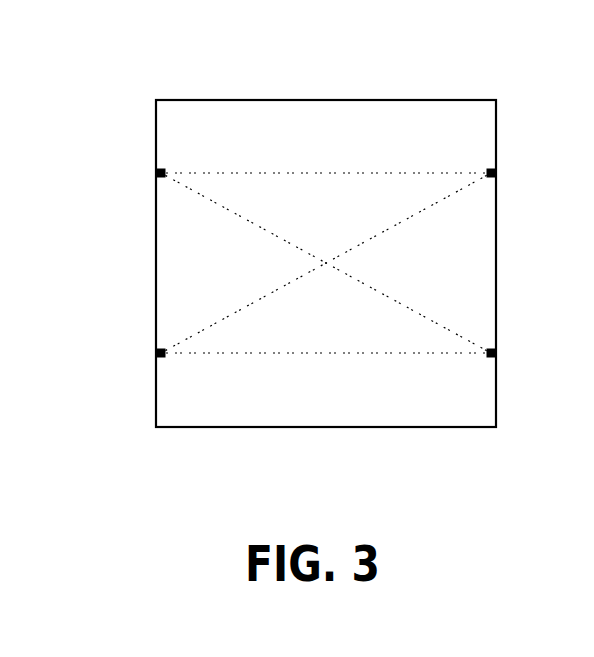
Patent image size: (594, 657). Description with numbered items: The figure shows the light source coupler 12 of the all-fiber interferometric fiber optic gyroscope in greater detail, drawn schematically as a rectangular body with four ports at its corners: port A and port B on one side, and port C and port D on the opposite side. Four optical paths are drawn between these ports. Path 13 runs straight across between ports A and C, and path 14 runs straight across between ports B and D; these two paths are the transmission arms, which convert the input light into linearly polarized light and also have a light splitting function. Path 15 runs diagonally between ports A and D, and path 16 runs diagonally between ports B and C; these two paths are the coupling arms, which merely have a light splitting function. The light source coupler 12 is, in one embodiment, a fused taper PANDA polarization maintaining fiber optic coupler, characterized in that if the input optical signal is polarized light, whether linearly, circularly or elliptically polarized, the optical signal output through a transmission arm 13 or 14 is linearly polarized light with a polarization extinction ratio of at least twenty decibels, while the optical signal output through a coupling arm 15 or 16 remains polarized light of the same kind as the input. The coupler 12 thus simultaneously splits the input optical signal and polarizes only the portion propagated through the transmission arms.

The light source coupler 12 is at (193, 100).
The path between ports A-C 13 is at (277, 172).
The path between ports B-D 14 is at (273, 356).
The path between ports A-D 15 is at (413, 307).
The path between ports B-C 16 is at (225, 314).
The port A is at (155, 173).
The port B is at (155, 353).
The port C is at (497, 173).
The port D is at (497, 353).